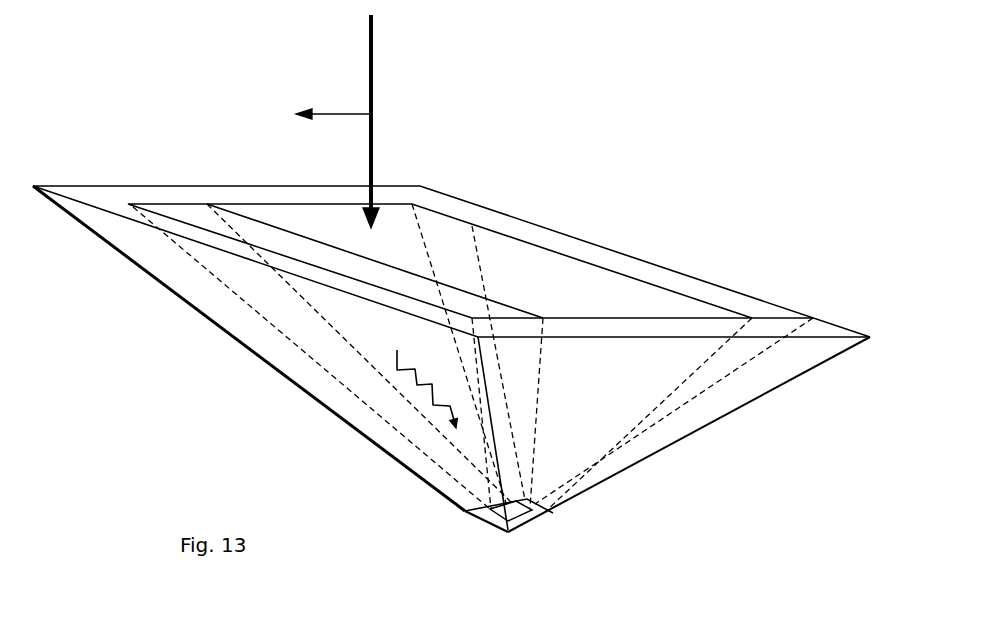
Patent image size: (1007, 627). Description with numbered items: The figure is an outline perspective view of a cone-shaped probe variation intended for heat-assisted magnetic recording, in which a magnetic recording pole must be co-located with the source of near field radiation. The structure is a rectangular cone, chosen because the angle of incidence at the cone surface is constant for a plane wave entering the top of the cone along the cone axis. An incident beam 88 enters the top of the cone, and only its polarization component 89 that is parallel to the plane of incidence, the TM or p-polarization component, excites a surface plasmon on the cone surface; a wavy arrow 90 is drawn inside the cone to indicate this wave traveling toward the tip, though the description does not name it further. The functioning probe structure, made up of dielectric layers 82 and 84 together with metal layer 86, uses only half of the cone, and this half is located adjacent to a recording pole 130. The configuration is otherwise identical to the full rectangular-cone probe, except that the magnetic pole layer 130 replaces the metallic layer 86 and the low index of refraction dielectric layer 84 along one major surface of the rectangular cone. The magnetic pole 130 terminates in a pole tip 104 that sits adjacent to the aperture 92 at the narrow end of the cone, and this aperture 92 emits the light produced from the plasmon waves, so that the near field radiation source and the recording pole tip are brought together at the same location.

The dielectric layer 82 is at (400, 228).
The dielectric layer 84 is at (197, 220).
The metal layer 86 is at (315, 275).
The incident beam 88 is at (375, 87).
The polarization component 89 is at (343, 117).
The scattered radiation 90 is at (420, 387).
The aperture 92 is at (507, 522).
The pole tip 104 is at (527, 500).
The magnetic pole 130 is at (585, 253).